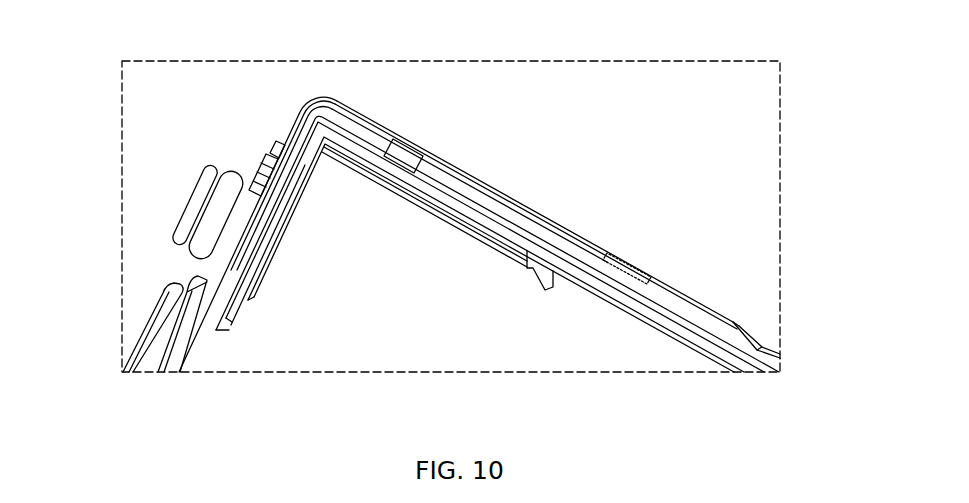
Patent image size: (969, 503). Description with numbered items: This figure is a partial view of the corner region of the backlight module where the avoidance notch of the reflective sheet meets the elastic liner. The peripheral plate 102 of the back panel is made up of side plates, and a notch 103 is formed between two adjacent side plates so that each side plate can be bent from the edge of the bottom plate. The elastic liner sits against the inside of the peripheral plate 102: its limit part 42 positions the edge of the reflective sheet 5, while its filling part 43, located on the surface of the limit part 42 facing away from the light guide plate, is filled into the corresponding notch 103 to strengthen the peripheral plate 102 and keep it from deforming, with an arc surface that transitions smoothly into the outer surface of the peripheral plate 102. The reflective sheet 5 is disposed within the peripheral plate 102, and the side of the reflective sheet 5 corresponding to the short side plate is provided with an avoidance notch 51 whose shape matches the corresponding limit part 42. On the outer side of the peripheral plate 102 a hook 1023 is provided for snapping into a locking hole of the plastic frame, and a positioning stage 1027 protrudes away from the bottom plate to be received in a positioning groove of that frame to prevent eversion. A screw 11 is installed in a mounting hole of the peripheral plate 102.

The reflective sheet 5 is at (567, 352).
The screw 11 is at (200, 180).
The limit part 42 is at (442, 200).
The filling part 43 is at (318, 105).
The avoidance notch 51 is at (544, 285).
The peripheral plate 102 is at (637, 298).
The notch 103 is at (397, 131).
The hook 1023 is at (707, 316).
The positioning stage 1027 is at (232, 227).